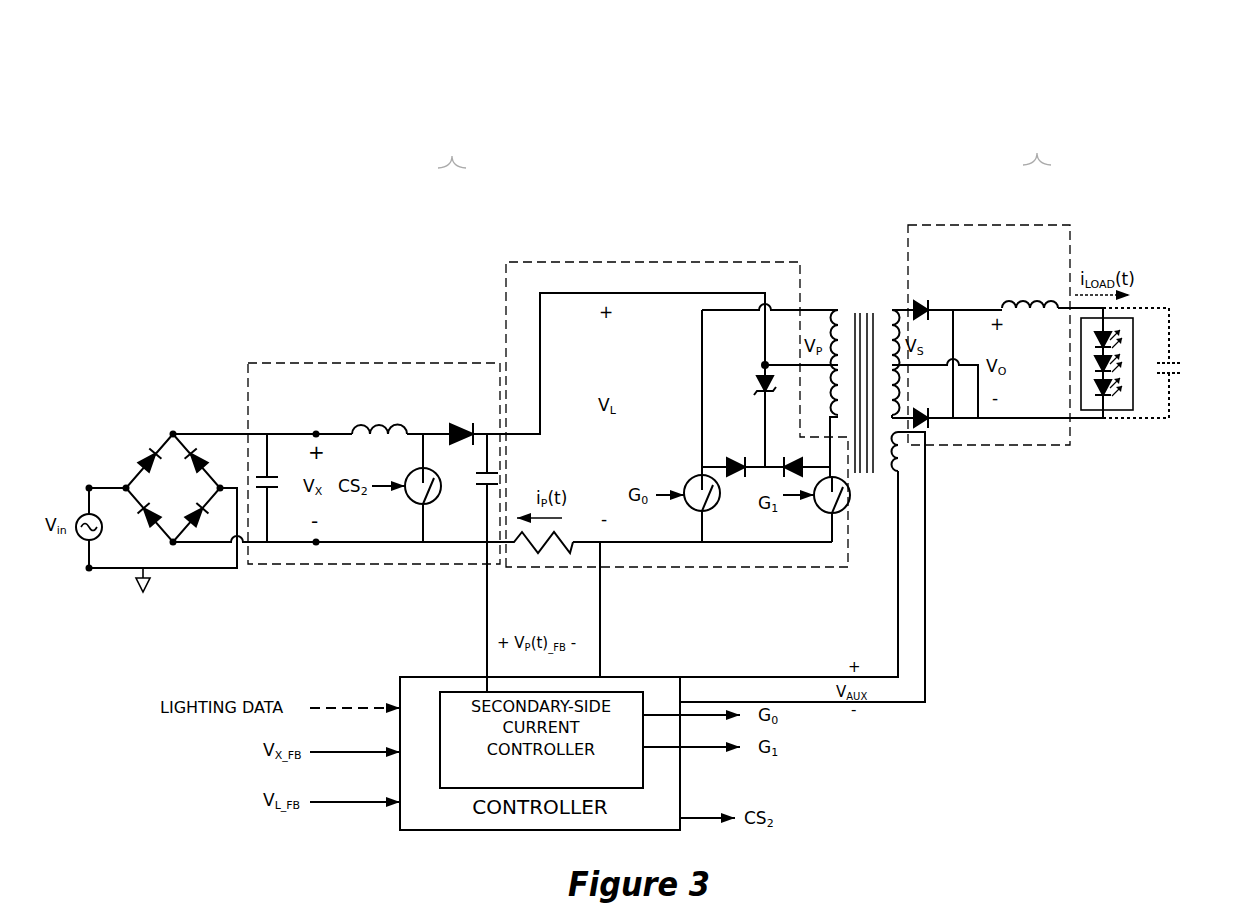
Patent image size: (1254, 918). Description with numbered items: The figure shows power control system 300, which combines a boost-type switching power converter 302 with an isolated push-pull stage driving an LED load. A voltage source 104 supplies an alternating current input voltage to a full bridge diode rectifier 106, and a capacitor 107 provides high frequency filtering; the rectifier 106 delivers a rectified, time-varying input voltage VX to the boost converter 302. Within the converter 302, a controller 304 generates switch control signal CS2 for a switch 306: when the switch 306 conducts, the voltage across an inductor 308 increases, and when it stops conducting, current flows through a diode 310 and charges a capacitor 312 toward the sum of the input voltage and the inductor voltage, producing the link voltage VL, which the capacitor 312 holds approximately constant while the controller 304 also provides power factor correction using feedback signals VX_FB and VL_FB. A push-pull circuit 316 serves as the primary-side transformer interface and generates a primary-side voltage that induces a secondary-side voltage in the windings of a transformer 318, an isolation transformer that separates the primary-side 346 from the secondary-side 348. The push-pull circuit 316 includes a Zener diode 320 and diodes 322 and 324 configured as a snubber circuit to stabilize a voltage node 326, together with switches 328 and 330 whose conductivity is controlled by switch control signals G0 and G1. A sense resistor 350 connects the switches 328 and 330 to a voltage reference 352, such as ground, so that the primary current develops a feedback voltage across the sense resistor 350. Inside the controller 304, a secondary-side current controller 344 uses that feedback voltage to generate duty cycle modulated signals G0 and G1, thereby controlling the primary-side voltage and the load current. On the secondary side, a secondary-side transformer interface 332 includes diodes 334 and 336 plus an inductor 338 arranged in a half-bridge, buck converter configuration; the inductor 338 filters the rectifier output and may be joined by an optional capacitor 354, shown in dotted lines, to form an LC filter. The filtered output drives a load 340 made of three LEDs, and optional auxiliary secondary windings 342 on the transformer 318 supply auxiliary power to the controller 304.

The power control system 300 is at (895, 112).
The voltage source 104 is at (75, 533).
The full bridge diode rectifier 106 is at (173, 488).
The capacitor 107 is at (257, 475).
The boost-type switching power converter 302 is at (328, 363).
The controller 304 is at (423, 677).
The switch 306 is at (408, 495).
The inductor 308 is at (377, 427).
The diode 310 is at (451, 427).
The capacitor 312 is at (498, 477).
The push-pull circuit 316 is at (506, 262).
The transformer 318 is at (856, 292).
The Zener diode 320 is at (760, 392).
The diode 322 is at (743, 460).
The diode 324 is at (796, 460).
The voltage node 326 is at (763, 364).
The switch 328 is at (687, 481).
The switch 330 is at (851, 500).
The secondary-side transformer interface 332 is at (988, 225).
The diode 334 is at (918, 302).
The diode 336 is at (928, 427).
The inductor 338 is at (1006, 300).
The load 340 is at (1113, 412).
The auxiliary secondary windings 342 is at (899, 478).
The secondary-side current controller 344 is at (541, 740).
The primary-side 346 is at (455, 146).
The secondary-side 348 is at (1040, 143).
The sense resistor 350 is at (563, 552).
The voltage reference 352 is at (143, 593).
The capacitor 354 is at (1172, 363).